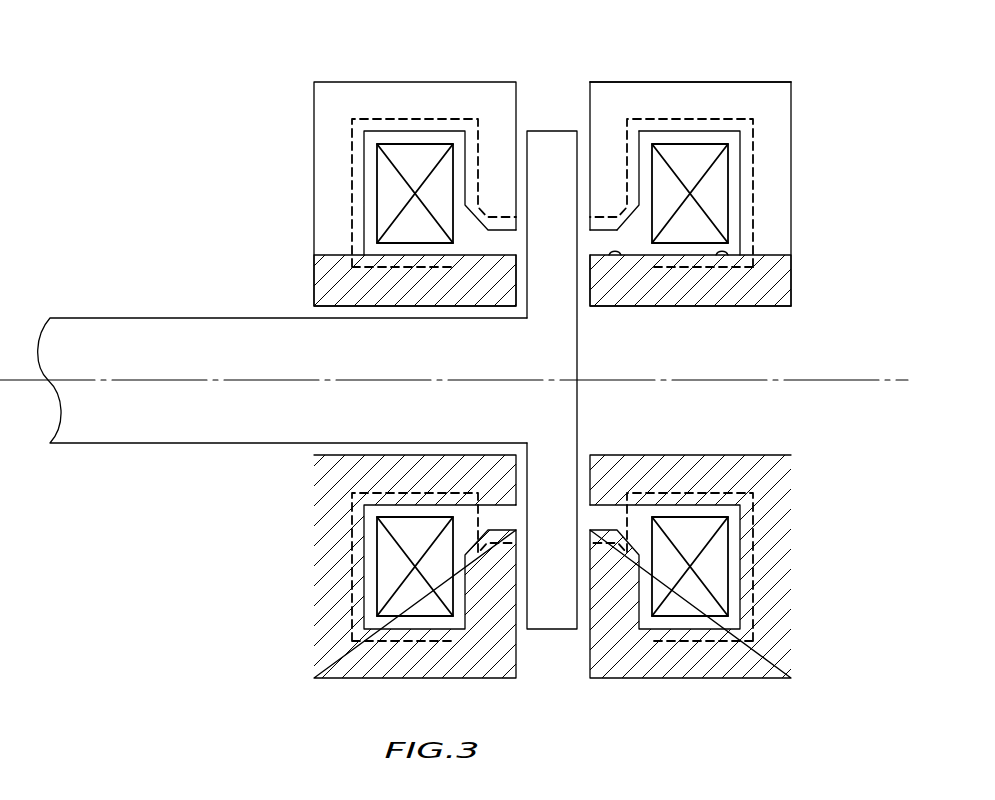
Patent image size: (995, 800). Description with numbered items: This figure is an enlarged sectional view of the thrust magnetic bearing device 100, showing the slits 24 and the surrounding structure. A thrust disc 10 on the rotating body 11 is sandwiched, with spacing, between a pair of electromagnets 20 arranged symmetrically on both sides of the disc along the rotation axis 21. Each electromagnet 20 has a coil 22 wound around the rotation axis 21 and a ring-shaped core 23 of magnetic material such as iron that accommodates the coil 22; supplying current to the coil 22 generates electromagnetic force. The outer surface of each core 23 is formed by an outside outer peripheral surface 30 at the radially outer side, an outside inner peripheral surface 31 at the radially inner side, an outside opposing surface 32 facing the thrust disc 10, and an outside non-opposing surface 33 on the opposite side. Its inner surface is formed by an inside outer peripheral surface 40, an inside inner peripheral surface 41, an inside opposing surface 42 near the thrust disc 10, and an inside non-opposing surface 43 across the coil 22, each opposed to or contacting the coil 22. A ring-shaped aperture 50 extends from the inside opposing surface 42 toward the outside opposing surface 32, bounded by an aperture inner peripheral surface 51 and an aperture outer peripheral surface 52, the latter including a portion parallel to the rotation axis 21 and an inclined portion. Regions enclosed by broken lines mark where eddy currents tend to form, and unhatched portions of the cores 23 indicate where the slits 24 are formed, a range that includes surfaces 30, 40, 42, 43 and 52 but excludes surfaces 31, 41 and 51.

The thrust magnetic bearing device 100 is at (260, 102).
The thrust disc 10 is at (555, 618).
The rotating body 11 is at (155, 330).
The rotation axis 21 is at (878, 380).
The electromagnet 20 is at (342, 80).
The coil 22 is at (717, 190).
The core 23 is at (778, 107).
The slit 24 is at (703, 113).
The outside outer peripheral surface 30 is at (686, 82).
The outside inner peripheral surface 31 is at (700, 305).
The outside opposing surface 32 is at (590, 108).
The outside non-opposing surface 33 is at (791, 150).
The inside outer peripheral surface 40 is at (663, 138).
The inside inner peripheral surface 41 is at (722, 252).
The inside opposing surface 42 is at (648, 142).
The inside non-opposing surface 43 is at (735, 217).
The aperture 50 is at (615, 252).
The aperture inner peripheral surface 51 is at (624, 240).
The aperture outer peripheral surface 52 is at (602, 230).